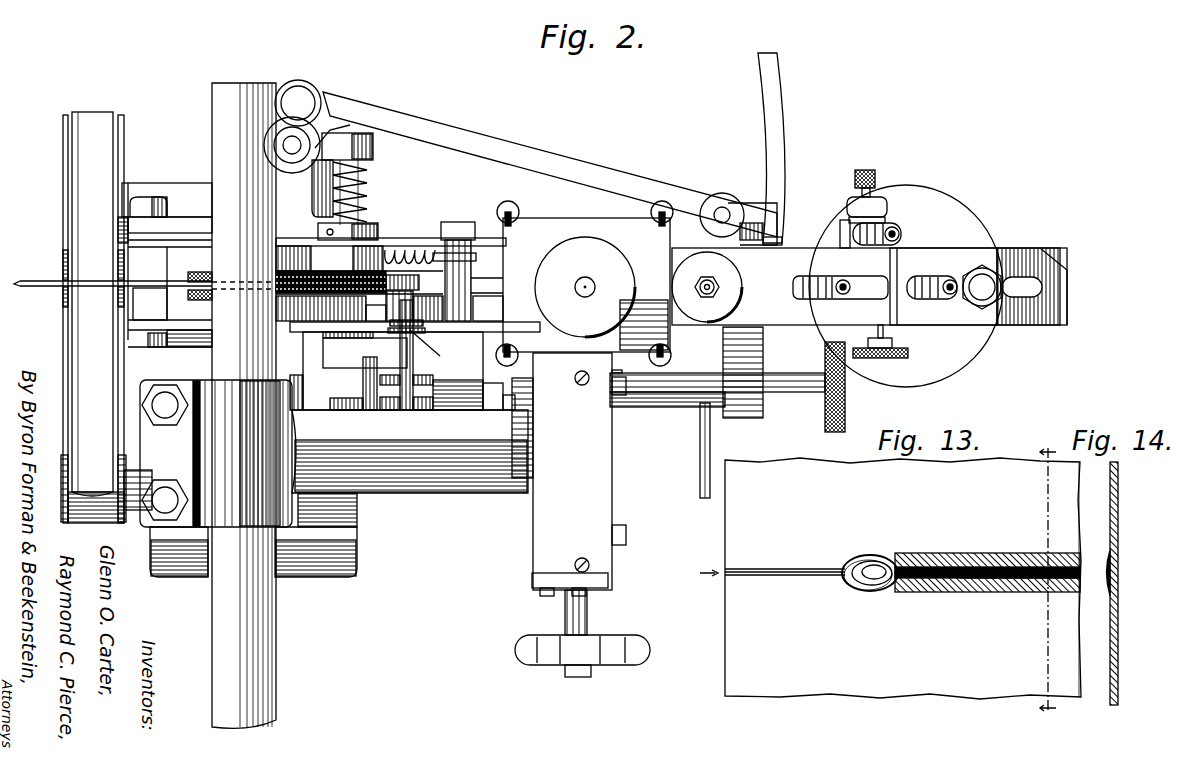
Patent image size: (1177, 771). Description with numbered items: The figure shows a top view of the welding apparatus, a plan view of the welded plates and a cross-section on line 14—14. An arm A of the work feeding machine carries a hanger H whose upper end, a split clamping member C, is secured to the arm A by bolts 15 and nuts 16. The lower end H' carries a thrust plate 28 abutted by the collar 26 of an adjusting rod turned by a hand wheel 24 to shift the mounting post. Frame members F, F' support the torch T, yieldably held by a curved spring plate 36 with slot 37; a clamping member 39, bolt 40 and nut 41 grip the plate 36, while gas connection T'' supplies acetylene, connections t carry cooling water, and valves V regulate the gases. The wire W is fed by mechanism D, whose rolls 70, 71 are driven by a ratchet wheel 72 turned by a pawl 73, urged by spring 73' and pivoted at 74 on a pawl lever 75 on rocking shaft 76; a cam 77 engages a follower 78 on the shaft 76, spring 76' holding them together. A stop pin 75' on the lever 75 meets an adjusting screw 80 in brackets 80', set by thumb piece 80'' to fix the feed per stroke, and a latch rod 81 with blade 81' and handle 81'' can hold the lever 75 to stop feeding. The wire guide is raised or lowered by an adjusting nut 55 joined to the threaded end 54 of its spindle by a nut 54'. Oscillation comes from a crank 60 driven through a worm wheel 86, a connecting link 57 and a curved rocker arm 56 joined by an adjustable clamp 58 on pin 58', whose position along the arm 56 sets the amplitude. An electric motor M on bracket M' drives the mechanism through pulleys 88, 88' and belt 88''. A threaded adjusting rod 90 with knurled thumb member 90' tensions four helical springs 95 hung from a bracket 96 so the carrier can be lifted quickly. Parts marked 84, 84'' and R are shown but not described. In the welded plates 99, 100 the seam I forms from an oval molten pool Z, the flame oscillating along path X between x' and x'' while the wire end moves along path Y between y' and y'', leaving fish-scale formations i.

In FIG. 2, the bolts 15 is at (165, 408).
In FIG. 2, the nuts 16 is at (166, 498).
In FIG. 2, the hand wheel 24 is at (520, 645).
In FIG. 2, the enlarged collar of rod 26 is at (565, 612).
In FIG. 2, the thrust plate 28 is at (532, 578).
In FIG. 2, the curved spring supporting plate 36 is at (1028, 256).
In FIG. 2, the longitudinal slot 37 is at (1048, 265).
In FIG. 2, the clamping member 39 is at (930, 252).
In FIG. 2, the bolt 40 is at (984, 282).
In FIG. 2, the nut 41 is at (965, 275).
In FIG. 2, the reduced threaded portion 54 is at (736, 286).
In FIG. 2, the nut 54' is at (746, 298).
In FIG. 2, the adjusting nut 55 is at (740, 272).
In FIG. 2, the curved rocker arm 56 is at (778, 110).
In FIG. 2, the connecting link 57 is at (622, 177).
In FIG. 2, the adjustable clamping device 58 is at (755, 208).
In FIG. 2, the pin 58' is at (722, 203).
In FIG. 2, the crank 60 is at (305, 82).
In FIG. 2, the feeding roll 70 is at (392, 282).
In FIG. 2, the feeding roll 71 is at (197, 275).
In FIG. 2, the ratchet wheel 72 is at (287, 308).
In FIG. 2, the pawl 73 is at (425, 338).
In FIG. 2, the spring 73' is at (440, 351).
In FIG. 2, the pawl pivot 74 is at (413, 380).
In FIG. 2, the pawl lever 75 is at (393, 371).
In FIG. 2, the stop pin 75' is at (396, 383).
In FIG. 2, the pawl lever operating shaft 76 is at (359, 192).
In FIG. 2, the spring 76' is at (364, 214).
In FIG. 2, the cam 77 is at (322, 128).
In FIG. 2, the follower 78 is at (373, 149).
In FIG. 2, the adjusting screw 80 is at (717, 368).
In FIG. 2, the brackets 80' is at (623, 381).
In FIG. 2, the thumb piece 80'' is at (856, 387).
In FIG. 2, the latch rod 81 is at (667, 410).
In FIG. 2, the blade 81' is at (334, 396).
In FIG. 2, the handle 81'' is at (723, 450).
In FIG. 2, the spring 84 is at (410, 235).
In FIG. 2, the bolt 84'' is at (462, 260).
In FIG. 2, the worm wheel 86 is at (308, 125).
In FIG. 2, the pulley 88 is at (145, 411).
In FIG. 2, the pulley 88' is at (80, 317).
In FIG. 2, the belt 88'' is at (60, 302).
In FIG. 2, the threaded adjusting rod 90 is at (587, 271).
In FIG. 2, the knurled thumb member 90' is at (594, 281).
In FIG. 2, the helical springs 95 is at (650, 213).
In FIG. 2, the bracket 96 is at (586, 285).
In FIG. 14, the metal plate 99 is at (1075, 498).
In FIG. 14, the metal plate 100 is at (1075, 648).
In FIG. 13, the section line 14 is at (1060, 447).
In FIG. 2, the arm A is at (243, 84).
In FIG. 2, the clamping member C is at (216, 453).
In FIG. 2, the feeding mechanism D is at (408, 285).
In FIG. 2, the frame member F is at (487, 266).
In FIG. 2, the frame member F' is at (488, 311).
In FIG. 2, the hanger H is at (410, 464).
In FIG. 2, the lower hanger member H' is at (569, 471).
In FIG. 2, the electric motor M is at (253, 546).
In FIG. 2, the bracket M' is at (138, 513).
In FIG. 2, the ring R is at (920, 190).
In FIG. 2, the welding torch T is at (840, 296).
In FIG. 2, the gas supply tube connection T'' is at (905, 275).
In FIG. 2, the cooling connections t is at (837, 296).
In FIG. 2, the valves V is at (868, 172).
In FIG. 2, the filling material W is at (138, 286).
In FIG. 13, the path of heating flame X is at (905, 588).
In FIG. 13, the path of welding wire end Y is at (845, 565).
In FIG. 13, the molten pool Z is at (866, 590).
In FIG. 14, the seam I is at (1108, 572).
In FIG. 13, the fish scale formations i is at (960, 588).
In FIG. 13, the flame position x' is at (884, 600).
In FIG. 13, the flame position x'' is at (894, 539).
In FIG. 13, the wire end position y' is at (856, 545).
In FIG. 13, the wire end position y'' is at (845, 598).